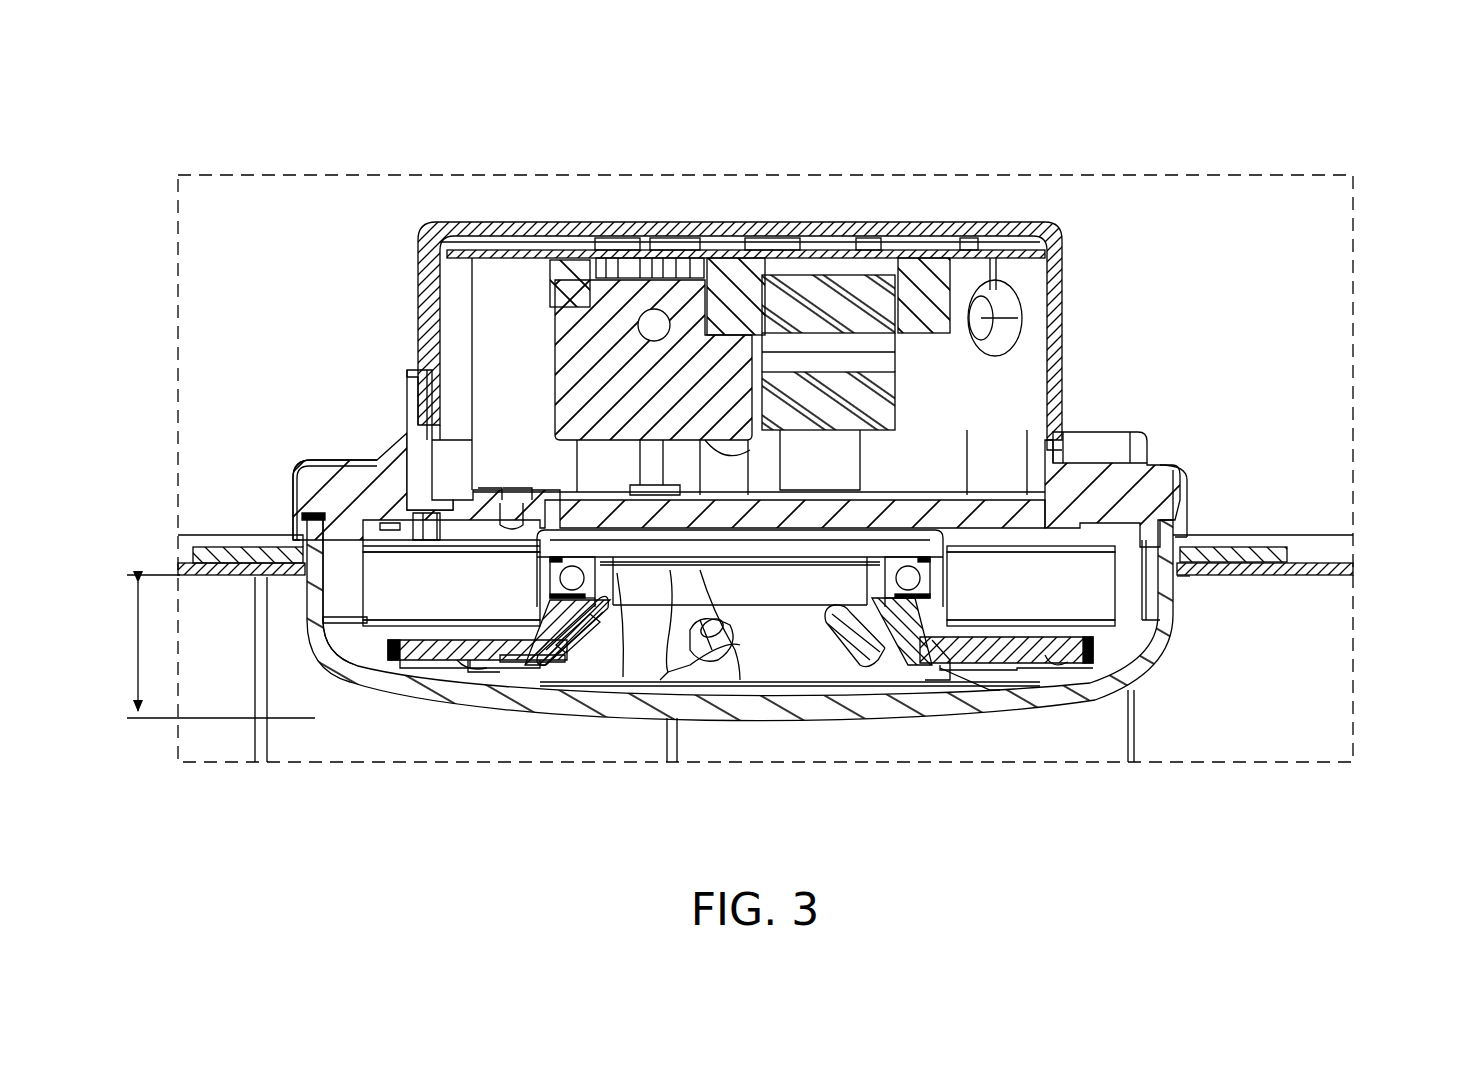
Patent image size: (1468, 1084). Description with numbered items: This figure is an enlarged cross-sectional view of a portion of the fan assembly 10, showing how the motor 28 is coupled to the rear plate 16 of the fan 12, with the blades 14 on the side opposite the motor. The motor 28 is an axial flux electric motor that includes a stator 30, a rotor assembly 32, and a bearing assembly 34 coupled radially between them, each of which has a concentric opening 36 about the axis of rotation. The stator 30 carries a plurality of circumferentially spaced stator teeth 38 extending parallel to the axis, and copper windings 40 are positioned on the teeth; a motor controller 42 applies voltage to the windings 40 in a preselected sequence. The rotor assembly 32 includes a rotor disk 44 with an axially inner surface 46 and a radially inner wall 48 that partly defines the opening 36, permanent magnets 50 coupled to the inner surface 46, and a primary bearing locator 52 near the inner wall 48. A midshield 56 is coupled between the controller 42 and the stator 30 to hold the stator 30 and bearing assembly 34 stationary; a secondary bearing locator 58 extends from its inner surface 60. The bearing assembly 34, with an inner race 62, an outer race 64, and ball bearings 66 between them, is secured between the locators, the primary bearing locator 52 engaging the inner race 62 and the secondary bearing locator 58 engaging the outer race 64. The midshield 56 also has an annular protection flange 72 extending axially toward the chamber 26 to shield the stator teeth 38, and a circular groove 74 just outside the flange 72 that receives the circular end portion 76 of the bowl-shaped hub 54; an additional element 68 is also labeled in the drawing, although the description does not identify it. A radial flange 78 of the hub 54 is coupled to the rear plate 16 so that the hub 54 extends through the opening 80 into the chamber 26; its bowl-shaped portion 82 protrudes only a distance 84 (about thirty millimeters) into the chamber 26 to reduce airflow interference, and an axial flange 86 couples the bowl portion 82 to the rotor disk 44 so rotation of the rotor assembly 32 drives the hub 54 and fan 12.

The fan assembly 10 is at (1230, 143).
The fan 12 is at (1370, 616).
The blades 14 is at (287, 760).
The rear plate 16 is at (1303, 548).
The chamber 26 is at (660, 740).
The motor 28 is at (1130, 640).
The stator 30 is at (1118, 586).
The rotor assembly 32 is at (995, 700).
The bearing assembly 34 is at (545, 640).
The concentric opening 36 is at (750, 615).
The stator teeth 38 is at (1058, 485).
The copper windings 40 is at (380, 540).
The motor controller 42 is at (1017, 268).
The rotor disk 44 is at (1035, 655).
The axially inner surface 46 is at (1075, 655).
The radially inner wall 48 is at (632, 600).
The permanent magnets 50 is at (445, 650).
The primary bearing locator 52 is at (860, 600).
The hub 54 is at (1140, 690).
The midshield 56 is at (398, 450).
The secondary bearing locator 58 is at (968, 665).
The inner surface 60 is at (893, 520).
The inner race 62 is at (615, 600).
The outer race 64 is at (945, 600).
The ball bearings 66 is at (890, 600).
The pan side wall 68 is at (400, 628).
The protection flange 72 is at (333, 576).
The circular groove 74 is at (1165, 510).
The circular end portion 76 is at (300, 500).
The radial flange 78 is at (1228, 556).
The opening 80 is at (1190, 578).
The bowl-shaped portion 82 is at (925, 670).
The distance 84 is at (130, 642).
The axial flange 86 is at (545, 690).